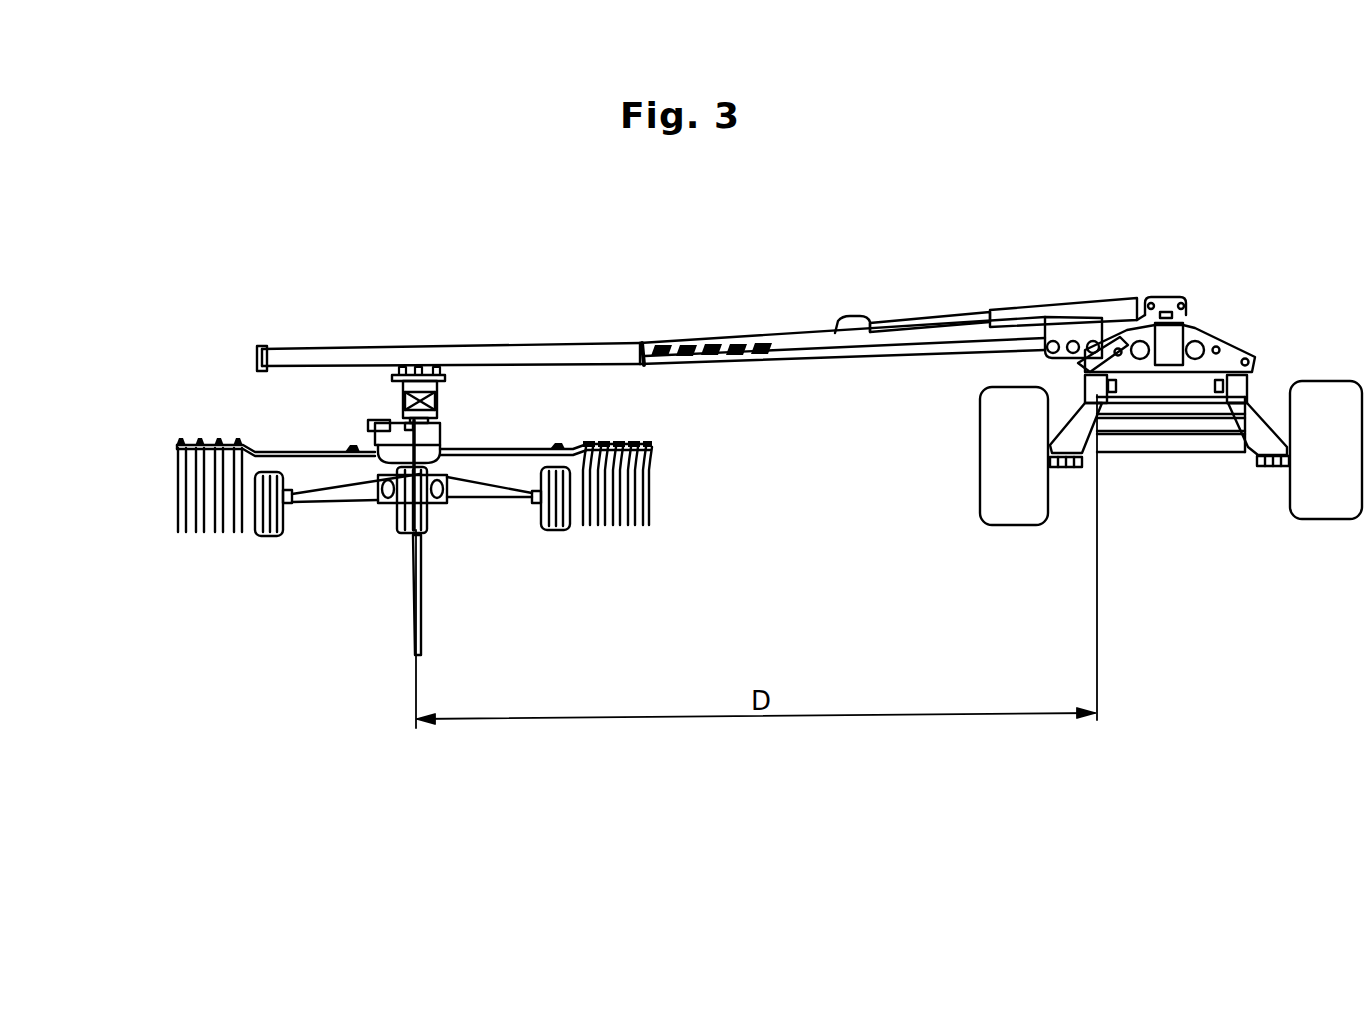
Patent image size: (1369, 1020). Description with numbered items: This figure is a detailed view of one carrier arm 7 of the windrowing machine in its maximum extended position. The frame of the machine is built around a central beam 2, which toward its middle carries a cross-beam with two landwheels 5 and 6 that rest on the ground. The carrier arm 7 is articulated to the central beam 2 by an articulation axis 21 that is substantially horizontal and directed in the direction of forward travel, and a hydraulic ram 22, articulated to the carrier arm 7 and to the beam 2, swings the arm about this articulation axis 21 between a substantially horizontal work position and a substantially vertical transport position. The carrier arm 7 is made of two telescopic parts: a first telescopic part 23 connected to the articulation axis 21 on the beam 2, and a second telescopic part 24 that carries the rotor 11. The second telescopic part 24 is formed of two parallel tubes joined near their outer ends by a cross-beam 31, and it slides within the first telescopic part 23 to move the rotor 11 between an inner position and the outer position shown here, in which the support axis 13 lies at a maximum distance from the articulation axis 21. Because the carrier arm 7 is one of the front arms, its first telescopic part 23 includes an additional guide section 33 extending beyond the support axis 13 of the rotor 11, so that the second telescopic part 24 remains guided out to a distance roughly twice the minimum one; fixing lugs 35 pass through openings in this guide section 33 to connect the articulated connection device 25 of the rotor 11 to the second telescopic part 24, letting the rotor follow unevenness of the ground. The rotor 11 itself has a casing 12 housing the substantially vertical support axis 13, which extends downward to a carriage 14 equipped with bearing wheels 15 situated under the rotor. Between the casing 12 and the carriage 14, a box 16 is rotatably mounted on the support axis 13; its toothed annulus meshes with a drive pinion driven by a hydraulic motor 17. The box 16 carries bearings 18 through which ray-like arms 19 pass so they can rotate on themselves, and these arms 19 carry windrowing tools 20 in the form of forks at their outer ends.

The central beam 2 is at (1190, 338).
The landwheel 5 is at (1014, 488).
The landwheel 6 is at (1289, 482).
The carrier arm 7 is at (461, 297).
The rotor 11 is at (128, 413).
The casing 12 is at (440, 427).
The support axis 13 is at (400, 466).
The carriage 14 is at (400, 572).
The bearing wheels 15 is at (229, 541).
The box 16 is at (496, 537).
The hydraulic motor 17 is at (343, 403).
The bearings 18 is at (539, 514).
The arms 19 is at (414, 406).
The windrowing tools 20 is at (386, 519).
The articulation axis 21 is at (1124, 283).
The hydraulic ram 22 is at (1045, 257).
The first telescopic part 23 is at (842, 408).
The second telescopic part 24 is at (449, 301).
The articulated connection device 25 is at (437, 395).
The cross-beam 31 is at (257, 348).
The additional guide section 33 is at (842, 297).
The fixing lugs 35 is at (403, 367).